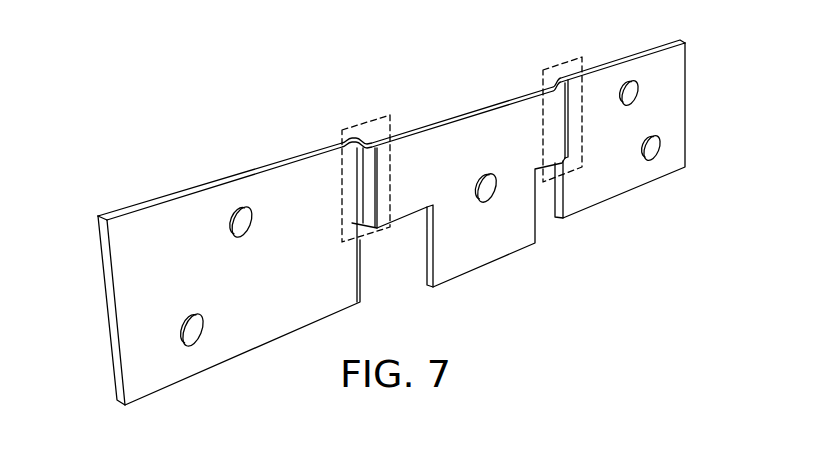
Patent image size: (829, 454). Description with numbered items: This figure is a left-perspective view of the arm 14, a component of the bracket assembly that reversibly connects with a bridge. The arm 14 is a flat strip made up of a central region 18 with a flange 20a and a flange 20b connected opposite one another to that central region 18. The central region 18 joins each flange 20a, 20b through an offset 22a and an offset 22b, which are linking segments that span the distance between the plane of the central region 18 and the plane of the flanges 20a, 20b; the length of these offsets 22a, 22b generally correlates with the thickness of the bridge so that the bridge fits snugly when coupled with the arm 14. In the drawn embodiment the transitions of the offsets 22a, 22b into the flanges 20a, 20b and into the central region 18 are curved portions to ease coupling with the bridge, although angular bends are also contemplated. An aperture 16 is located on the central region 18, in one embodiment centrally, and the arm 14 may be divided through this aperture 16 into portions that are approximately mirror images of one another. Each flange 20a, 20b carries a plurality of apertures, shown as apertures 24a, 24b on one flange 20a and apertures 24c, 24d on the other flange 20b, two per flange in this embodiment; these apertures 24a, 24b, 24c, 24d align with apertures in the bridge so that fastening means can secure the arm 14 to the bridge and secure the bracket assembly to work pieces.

The arm 14 is at (169, 127).
The aperture 16 is at (494, 196).
The central region 18 is at (431, 152).
The flange 20a is at (663, 93).
The flange 20b is at (140, 287).
The offset 22a is at (559, 67).
The offset 22b is at (366, 118).
The aperture 24a is at (622, 94).
The aperture 24b is at (661, 150).
The aperture 24c is at (251, 218).
The aperture 24d is at (205, 334).